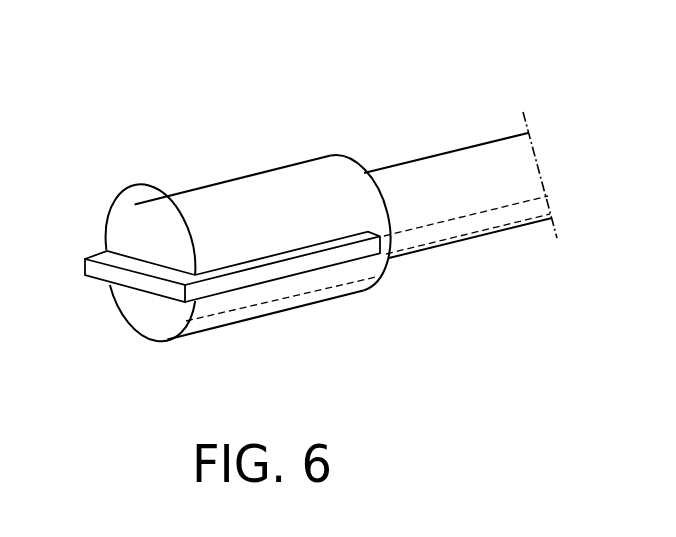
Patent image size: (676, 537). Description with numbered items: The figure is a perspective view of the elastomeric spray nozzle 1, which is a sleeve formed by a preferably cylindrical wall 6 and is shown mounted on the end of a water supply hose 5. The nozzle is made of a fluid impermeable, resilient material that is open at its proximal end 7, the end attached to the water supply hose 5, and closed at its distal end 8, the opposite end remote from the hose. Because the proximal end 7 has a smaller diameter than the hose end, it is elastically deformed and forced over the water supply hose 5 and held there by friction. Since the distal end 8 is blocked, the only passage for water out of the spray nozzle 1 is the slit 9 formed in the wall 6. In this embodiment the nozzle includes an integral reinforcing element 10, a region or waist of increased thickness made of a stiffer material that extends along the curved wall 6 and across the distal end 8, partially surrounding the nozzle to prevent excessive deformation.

The spray nozzle 1 is at (224, 121).
The water supply hose 5 is at (438, 153).
The wall 6 is at (345, 279).
The proximal end 7 is at (388, 270).
The distal end 8 is at (130, 226).
The slit 9 is at (242, 292).
The reinforcing element 10 is at (108, 277).